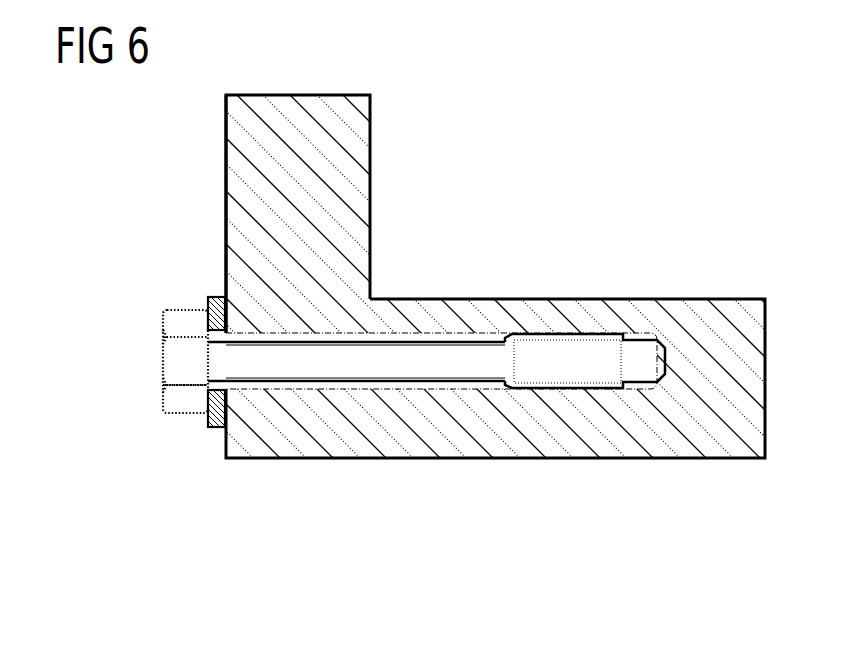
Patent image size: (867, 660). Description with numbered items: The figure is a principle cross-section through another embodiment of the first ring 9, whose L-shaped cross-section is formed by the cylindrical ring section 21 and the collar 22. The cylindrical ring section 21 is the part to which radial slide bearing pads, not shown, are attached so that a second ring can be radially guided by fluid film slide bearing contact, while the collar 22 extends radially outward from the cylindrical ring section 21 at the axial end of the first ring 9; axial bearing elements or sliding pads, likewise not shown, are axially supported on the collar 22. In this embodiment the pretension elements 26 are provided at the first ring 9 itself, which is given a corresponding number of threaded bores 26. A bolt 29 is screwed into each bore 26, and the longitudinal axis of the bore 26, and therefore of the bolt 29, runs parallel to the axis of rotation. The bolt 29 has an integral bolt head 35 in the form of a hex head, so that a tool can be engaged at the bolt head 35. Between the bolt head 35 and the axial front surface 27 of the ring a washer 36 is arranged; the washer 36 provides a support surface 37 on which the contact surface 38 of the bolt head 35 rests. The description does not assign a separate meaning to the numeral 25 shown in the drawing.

The first ring 9 is at (298, 518).
The cylindrical ring section 21 is at (598, 458).
The collar 22 is at (370, 183).
The threaded bolt 25 is at (443, 390).
The threaded bore 26 is at (488, 333).
The axial front surface 27 is at (226, 184).
The bolt 29 is at (312, 367).
The bolt head 35 is at (176, 307).
The washer 36 is at (216, 297).
The support surface 37 is at (208, 420).
The contact surface 38 is at (208, 385).